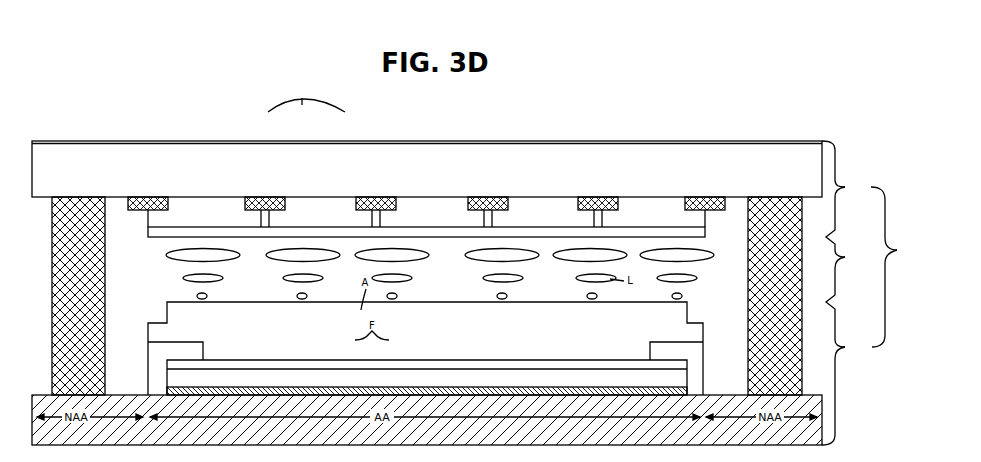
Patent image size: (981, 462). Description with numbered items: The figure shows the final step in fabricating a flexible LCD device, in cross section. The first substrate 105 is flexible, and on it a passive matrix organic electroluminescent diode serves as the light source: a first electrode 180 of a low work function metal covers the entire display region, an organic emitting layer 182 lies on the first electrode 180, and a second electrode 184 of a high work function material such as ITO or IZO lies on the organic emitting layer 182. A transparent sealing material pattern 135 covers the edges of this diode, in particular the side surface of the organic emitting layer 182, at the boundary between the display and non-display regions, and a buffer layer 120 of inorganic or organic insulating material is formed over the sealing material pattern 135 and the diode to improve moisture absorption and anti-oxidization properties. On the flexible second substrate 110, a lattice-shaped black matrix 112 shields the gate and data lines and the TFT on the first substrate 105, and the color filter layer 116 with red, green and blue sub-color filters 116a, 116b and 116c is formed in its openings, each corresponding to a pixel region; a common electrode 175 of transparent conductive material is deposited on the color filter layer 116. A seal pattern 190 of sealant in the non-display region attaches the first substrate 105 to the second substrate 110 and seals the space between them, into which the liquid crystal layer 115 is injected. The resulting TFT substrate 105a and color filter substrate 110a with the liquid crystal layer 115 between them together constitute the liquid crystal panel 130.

The first substrate 105 is at (427, 420).
The TFT substrate 105a is at (847, 351).
The second substrate 110 is at (783, 175).
The color filter substrate 110a is at (847, 167).
The black matrix 112 is at (136, 197).
The liquid crystal layer 115 is at (846, 225).
The color filter layer 116 is at (306, 98).
The red sub-color filter 116a is at (192, 207).
The green sub-color filter 116b is at (302, 207).
The blue sub-color filter 116c is at (428, 207).
The buffer layer 120 is at (438, 330).
The liquid crystal panel 130 is at (894, 267).
The sealing material pattern 135 is at (155, 355).
The common electrode 175 is at (249, 237).
The first electrode 180 is at (342, 387).
The organic emitting layer 182 is at (367, 380).
The second electrode 184 is at (394, 369).
The seal pattern 190 is at (104, 283).